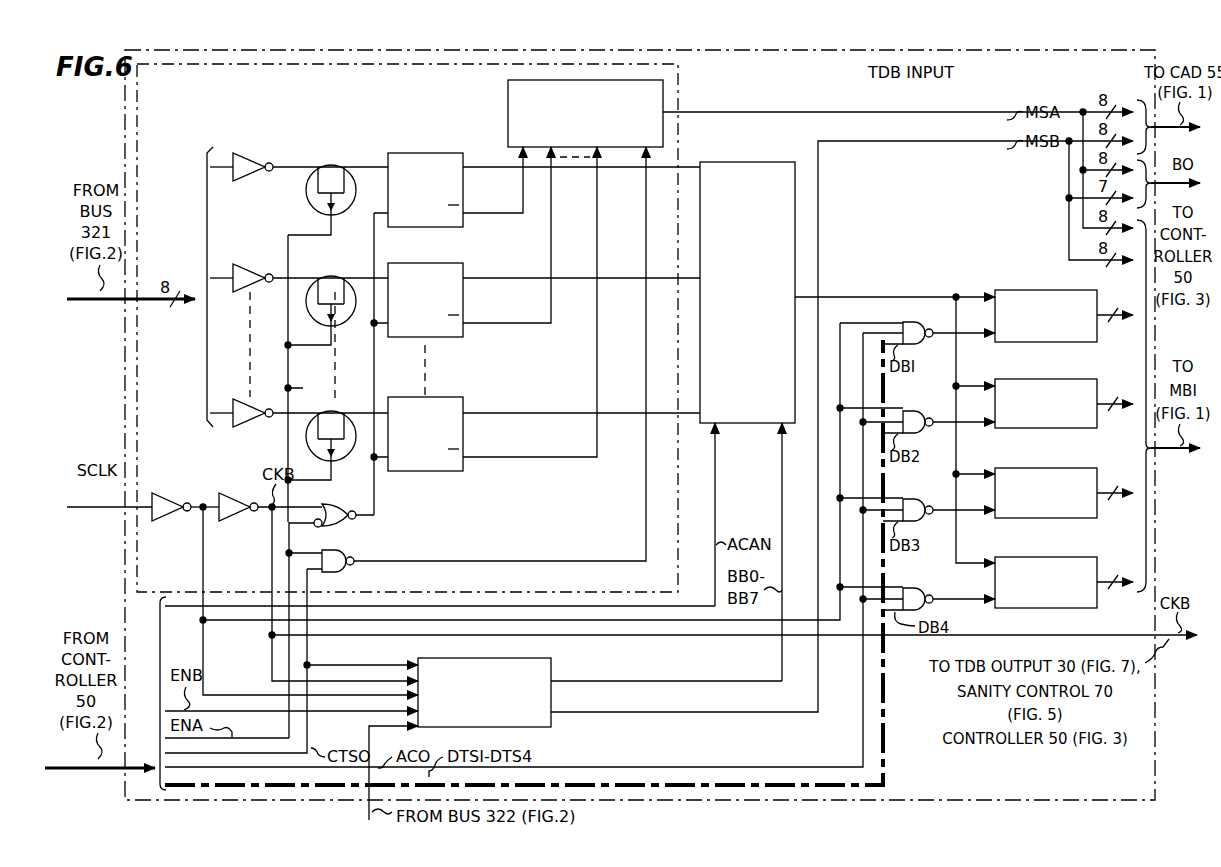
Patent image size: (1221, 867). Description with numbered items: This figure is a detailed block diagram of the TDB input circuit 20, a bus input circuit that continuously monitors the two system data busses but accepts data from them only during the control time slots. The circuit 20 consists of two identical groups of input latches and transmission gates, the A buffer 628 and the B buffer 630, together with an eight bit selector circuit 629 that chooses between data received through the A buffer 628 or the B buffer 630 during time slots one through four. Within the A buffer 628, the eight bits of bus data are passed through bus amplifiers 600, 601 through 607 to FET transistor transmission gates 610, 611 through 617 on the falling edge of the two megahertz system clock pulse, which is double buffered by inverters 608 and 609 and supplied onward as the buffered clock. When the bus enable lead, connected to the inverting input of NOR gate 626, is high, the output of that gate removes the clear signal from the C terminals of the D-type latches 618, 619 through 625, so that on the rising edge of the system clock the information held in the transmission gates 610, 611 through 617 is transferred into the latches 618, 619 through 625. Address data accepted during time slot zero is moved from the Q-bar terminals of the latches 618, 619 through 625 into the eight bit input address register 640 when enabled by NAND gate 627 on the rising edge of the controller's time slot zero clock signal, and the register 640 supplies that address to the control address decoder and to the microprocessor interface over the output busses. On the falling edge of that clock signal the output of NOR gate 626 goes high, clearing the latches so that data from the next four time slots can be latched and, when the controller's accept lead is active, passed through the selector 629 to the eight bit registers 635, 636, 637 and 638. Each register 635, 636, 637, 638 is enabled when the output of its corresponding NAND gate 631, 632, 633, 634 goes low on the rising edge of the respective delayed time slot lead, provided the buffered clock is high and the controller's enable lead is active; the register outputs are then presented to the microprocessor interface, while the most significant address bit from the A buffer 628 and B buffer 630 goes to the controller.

The TDB input circuit 20 is at (125, 128).
The bus amplifier 600 is at (226, 156).
The bus amplifier 601 is at (224, 276).
The bus amplifier 607 is at (224, 412).
The inverter 608 is at (162, 502).
The inverter 609 is at (228, 502).
The FET transistor transmission gate 610 is at (330, 164).
The FET transistor transmission gate 611 is at (326, 277).
The FET transistor transmission gate 617 is at (332, 412).
The D-type latch 618 is at (440, 154).
The D-type latch 619 is at (440, 264).
The D-type latch 625 is at (440, 398).
The NOR gate 626 is at (326, 510).
The NAND gate 627 is at (338, 558).
The A buffer 628 is at (682, 76).
The eight bit selector circuit 629 is at (771, 162).
The B buffer 630 is at (551, 667).
The NAND gate 631 is at (907, 328).
The NAND gate 632 is at (907, 417).
The NAND gate 633 is at (907, 505).
The NAND gate 634 is at (907, 594).
The eight bit register 635 is at (1040, 290).
The eight bit register 636 is at (1040, 379).
The eight bit register 637 is at (1040, 468).
The eight bit register 638 is at (1040, 557).
The input address register 640 is at (508, 112).